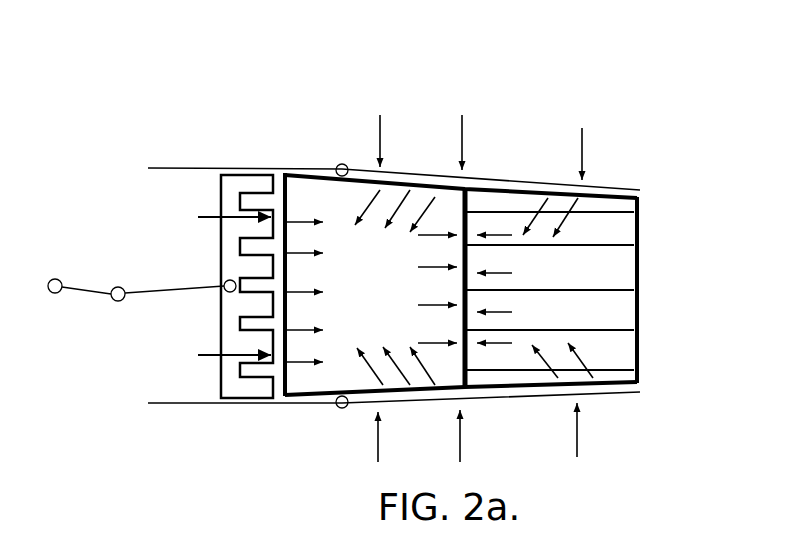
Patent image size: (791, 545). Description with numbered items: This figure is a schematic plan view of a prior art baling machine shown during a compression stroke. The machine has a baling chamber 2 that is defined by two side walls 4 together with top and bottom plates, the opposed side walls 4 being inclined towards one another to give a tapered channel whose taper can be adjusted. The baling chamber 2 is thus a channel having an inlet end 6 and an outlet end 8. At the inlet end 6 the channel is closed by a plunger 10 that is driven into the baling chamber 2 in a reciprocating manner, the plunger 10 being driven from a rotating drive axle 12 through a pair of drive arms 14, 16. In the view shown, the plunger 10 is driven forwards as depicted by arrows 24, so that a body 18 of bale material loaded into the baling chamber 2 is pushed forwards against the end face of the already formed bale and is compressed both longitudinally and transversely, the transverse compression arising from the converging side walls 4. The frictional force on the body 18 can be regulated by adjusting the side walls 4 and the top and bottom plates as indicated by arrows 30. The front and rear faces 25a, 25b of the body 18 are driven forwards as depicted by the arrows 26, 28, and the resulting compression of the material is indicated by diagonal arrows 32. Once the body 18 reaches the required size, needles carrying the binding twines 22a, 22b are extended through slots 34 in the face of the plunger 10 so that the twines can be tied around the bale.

The baling chamber 2 is at (412, 180).
The side walls 4 is at (527, 181).
The inlet end 6 is at (165, 173).
The outlet end 8 is at (639, 223).
The plunger 10 is at (238, 307).
The rotating drive axle 12 is at (57, 279).
The drive arm 14 is at (88, 292).
The drive arm 16 is at (168, 289).
The body of bale material 18 is at (380, 310).
The twine 22a is at (615, 212).
The twine 22b is at (620, 330).
The arrows 24 is at (213, 358).
The front face 25a is at (462, 380).
The rear face 25b is at (285, 385).
The arrows 26 is at (425, 303).
The arrows 28 is at (302, 290).
The arrows 30 is at (377, 428).
The diagonal arrows 32 is at (367, 208).
The slots 34 is at (257, 203).